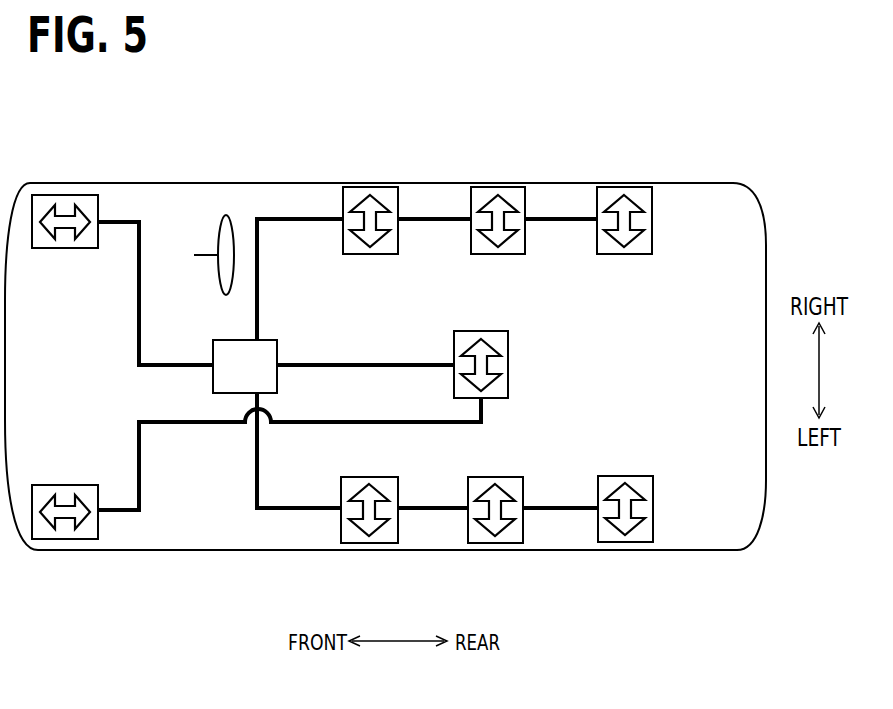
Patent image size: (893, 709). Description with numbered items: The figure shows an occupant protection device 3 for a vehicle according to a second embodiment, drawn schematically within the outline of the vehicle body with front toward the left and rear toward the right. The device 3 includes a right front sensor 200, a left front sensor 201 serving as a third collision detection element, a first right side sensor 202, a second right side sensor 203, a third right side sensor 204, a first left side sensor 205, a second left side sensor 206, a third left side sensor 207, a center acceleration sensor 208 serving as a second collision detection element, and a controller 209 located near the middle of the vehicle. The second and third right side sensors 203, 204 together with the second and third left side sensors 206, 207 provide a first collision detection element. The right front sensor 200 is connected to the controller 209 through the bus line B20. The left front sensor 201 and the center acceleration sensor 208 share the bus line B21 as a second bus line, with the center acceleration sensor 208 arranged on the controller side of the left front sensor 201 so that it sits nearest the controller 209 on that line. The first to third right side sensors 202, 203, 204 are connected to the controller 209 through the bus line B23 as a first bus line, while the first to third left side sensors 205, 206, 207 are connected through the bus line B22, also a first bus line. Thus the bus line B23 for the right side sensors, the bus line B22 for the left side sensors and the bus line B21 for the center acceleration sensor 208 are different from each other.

The occupant protection device 3 is at (399, 97).
The right front sensor 200 is at (47, 195).
The left front sensor 201 is at (46, 540).
The first right side sensor 202 is at (370, 187).
The second right side sensor 203 is at (498, 187).
The third right side sensor 204 is at (624, 187).
The first left side sensor 205 is at (351, 544).
The second left side sensor 206 is at (481, 544).
The third left side sensor 207 is at (611, 543).
The center acceleration sensor 208 is at (508, 340).
The controller 209 is at (277, 342).
The bus line B20 is at (139, 304).
The bus line B21 is at (139, 446).
The bus line B22 is at (300, 508).
The bus line B23 is at (302, 223).